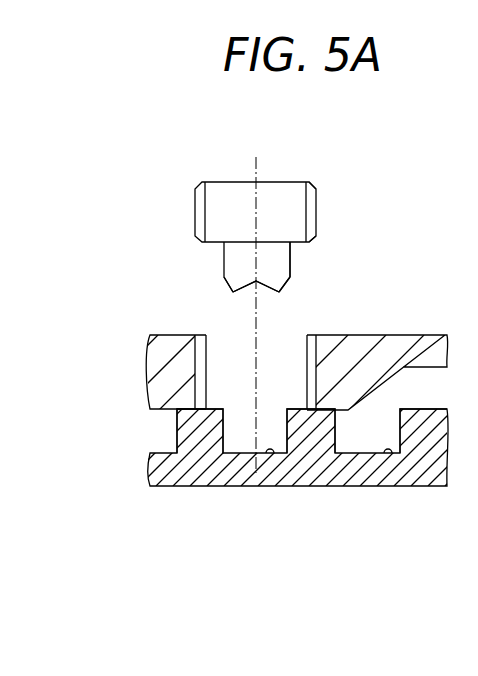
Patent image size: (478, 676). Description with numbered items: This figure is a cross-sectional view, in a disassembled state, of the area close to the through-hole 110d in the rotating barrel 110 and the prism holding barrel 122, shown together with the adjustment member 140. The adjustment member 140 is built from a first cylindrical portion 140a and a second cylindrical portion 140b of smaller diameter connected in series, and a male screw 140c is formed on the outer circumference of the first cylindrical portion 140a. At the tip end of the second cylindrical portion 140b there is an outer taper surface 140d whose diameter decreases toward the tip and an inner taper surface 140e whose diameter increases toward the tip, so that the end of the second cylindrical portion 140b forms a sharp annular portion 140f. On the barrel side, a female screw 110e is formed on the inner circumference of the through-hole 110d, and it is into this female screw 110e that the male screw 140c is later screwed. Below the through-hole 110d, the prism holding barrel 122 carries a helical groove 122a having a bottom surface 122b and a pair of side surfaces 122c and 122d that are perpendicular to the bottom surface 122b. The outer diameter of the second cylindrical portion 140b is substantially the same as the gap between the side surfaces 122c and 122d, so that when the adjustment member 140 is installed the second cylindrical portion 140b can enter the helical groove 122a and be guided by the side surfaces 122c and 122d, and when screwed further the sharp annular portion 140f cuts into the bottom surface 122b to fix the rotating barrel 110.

The rotating barrel 110 is at (150, 333).
The through-hole 110d is at (317, 335).
The female screw 110e is at (200, 333).
The prism holding barrel 122 is at (155, 487).
The helical groove 122a is at (390, 454).
The bottom surface 122b is at (271, 447).
The side surface 122c is at (226, 425).
The side surface 122d is at (283, 445).
The adjustment member 140 is at (225, 180).
The first cylindrical portion 140a is at (275, 190).
The second cylindrical portion 140b is at (280, 258).
The male screw 140c is at (311, 202).
The outer taper surface 140d is at (222, 283).
The inner taper surface 140e is at (283, 297).
The sharp annular portion 140f is at (233, 292).